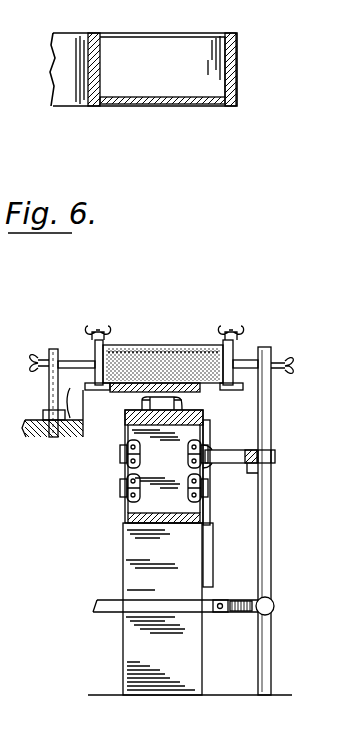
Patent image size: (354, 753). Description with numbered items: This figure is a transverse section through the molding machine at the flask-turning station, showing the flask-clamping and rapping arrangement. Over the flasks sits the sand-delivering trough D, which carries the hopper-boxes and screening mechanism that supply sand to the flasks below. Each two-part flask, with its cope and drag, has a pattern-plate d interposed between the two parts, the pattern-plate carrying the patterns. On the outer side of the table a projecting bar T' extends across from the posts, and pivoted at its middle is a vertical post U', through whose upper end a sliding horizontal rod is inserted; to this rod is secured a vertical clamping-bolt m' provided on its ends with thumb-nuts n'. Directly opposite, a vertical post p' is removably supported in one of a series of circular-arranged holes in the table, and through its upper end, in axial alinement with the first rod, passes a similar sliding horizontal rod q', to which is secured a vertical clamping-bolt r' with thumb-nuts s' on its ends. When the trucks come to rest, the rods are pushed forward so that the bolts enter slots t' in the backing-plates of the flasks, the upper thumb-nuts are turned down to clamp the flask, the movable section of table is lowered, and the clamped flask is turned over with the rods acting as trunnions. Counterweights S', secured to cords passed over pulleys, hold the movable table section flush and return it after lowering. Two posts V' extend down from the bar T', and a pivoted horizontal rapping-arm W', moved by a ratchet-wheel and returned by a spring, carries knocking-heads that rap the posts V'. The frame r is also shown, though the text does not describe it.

The sand-delivering trough D is at (143, 69).
The pattern-plate d is at (164, 345).
The thumb-nuts s' is at (106, 350).
The vertical clamping-bolt r' is at (91, 327).
The thumb-nuts n' is at (230, 345).
The vertical clamping-bolt m' is at (264, 333).
The vertical post p' is at (48, 393).
The sliding horizontal rod q' is at (62, 343).
The vertical post U' is at (278, 521).
The slots t' is at (280, 348).
The projecting bar T' is at (258, 459).
The frame r is at (165, 471).
The counterweights S' is at (219, 555).
The posts V' is at (193, 609).
The horizontal rapping-arm W' is at (183, 594).